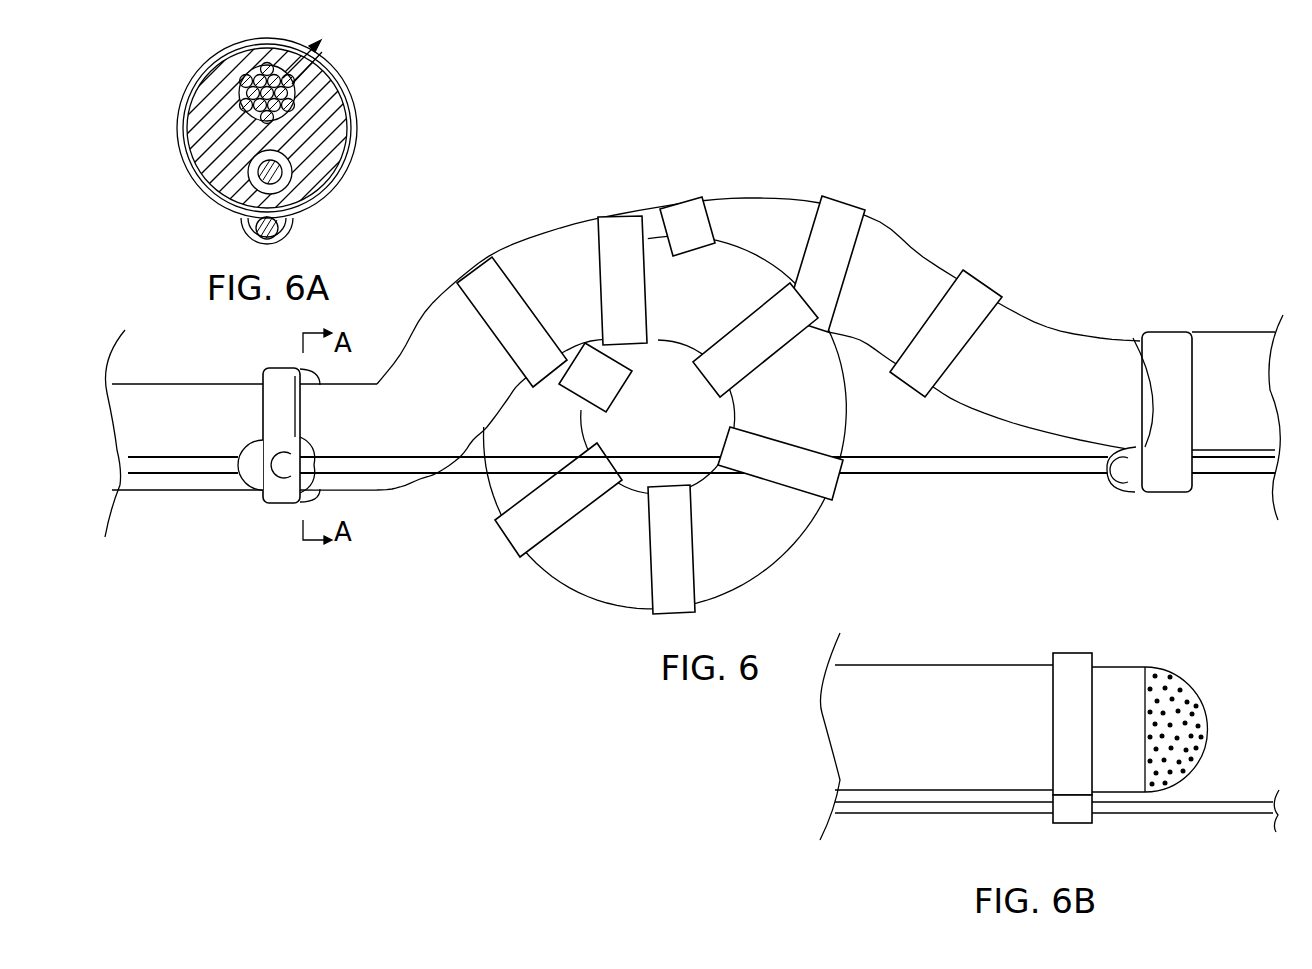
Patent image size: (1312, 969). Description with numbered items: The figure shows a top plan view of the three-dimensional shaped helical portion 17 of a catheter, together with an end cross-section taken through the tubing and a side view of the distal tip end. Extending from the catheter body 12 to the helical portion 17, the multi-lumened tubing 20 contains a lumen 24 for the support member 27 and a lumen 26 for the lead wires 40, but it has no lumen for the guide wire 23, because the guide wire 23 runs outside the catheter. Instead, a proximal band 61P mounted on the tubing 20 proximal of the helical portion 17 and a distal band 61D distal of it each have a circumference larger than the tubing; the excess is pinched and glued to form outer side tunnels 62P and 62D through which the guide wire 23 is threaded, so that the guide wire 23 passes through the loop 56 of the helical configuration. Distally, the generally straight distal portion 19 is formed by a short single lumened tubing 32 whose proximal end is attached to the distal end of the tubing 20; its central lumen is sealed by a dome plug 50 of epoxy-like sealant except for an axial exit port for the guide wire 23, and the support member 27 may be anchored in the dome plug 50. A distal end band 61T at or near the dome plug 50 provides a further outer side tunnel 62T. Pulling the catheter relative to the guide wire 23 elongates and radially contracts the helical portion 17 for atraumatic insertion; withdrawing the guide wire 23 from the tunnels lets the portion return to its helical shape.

In FIG. 6, the catheter body 12 is at (137, 490).
In FIG. 6, the helical portion 17 is at (580, 572).
In FIG. 6, the generally straight distal portion 19 is at (1224, 450).
In FIG. 6B, the generally straight distal portion 19 is at (975, 665).
In FIG. 6A, the multi-lumened tubing 20 is at (187, 130).
In FIG. 6, the guide wire 23 is at (988, 480).
In FIG. 6A, the guide wire 23 is at (279, 228).
In FIG. 6B, the guide wire 23 is at (900, 815).
In FIG. 6A, the lumen 24 is at (292, 170).
In FIG. 6A, the lumen 26 is at (240, 97).
In FIG. 6A, the support member 27 is at (258, 175).
In FIG. 6B, the single lumened tubing 32 is at (890, 680).
In FIG. 6A, the lead wires 40 is at (318, 49).
In FIG. 6B, the dome plug 50 is at (1210, 730).
In FIG. 6, the loop 56 is at (767, 562).
In FIG. 6, the proximal band 61P is at (280, 505).
In FIG. 6A, the proximal band 61P is at (358, 138).
In FIG. 6, the proximal outer side tunnel 62P is at (250, 473).
In FIG. 6A, the proximal outer side tunnel 62P is at (241, 228).
In FIG. 6, the distal band 61D is at (1160, 330).
In FIG. 6, the distal outer side tunnel 62D is at (1152, 496).
In FIG. 6B, the distal end band 61T is at (1072, 652).
In FIG. 6B, the distal end outer side tunnel 62T is at (1072, 823).